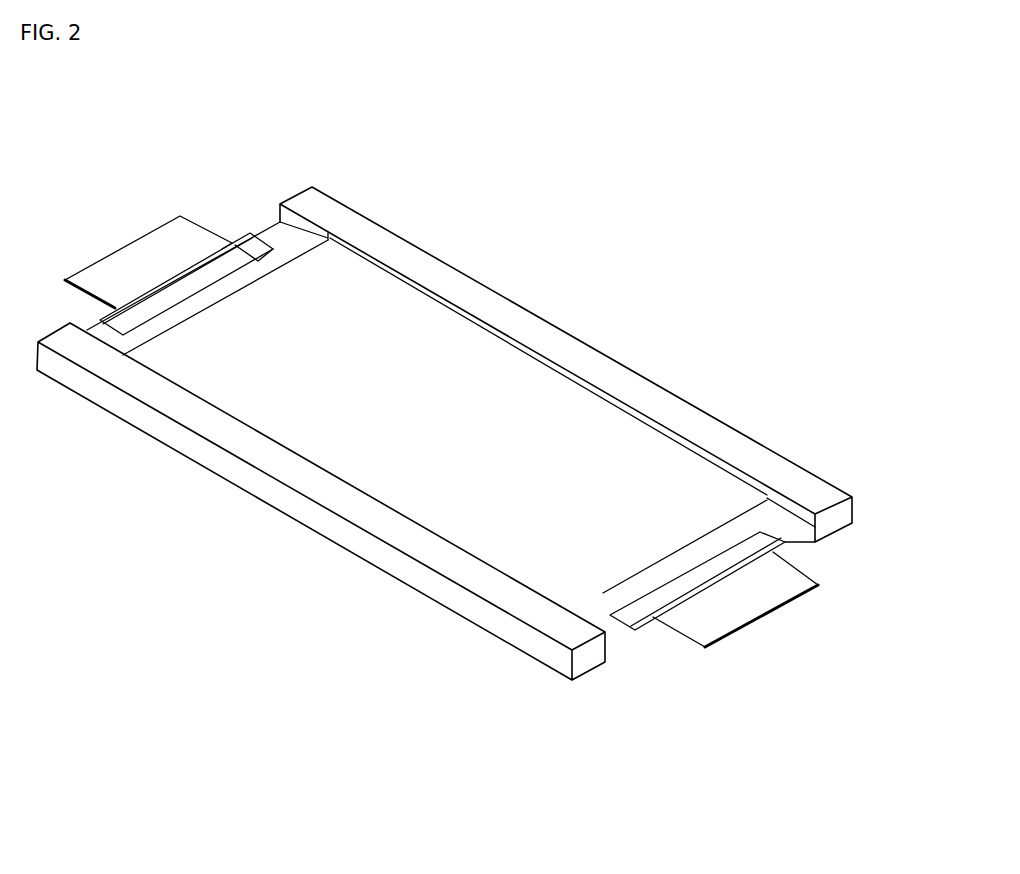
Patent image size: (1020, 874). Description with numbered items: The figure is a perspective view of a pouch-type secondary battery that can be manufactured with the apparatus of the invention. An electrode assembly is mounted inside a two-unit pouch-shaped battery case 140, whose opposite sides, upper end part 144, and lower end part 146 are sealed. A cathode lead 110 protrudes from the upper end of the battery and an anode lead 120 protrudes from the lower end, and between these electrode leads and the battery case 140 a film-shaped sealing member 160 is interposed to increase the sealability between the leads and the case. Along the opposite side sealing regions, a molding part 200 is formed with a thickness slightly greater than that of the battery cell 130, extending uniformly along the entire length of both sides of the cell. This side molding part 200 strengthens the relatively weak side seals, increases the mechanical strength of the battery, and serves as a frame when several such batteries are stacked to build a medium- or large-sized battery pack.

The cathode lead 110 is at (722, 622).
The anode lead 120 is at (134, 253).
The battery cell 130 is at (437, 323).
The pouch-shaped battery case 140 is at (617, 637).
The upper end part 144 is at (787, 527).
The lower end part 146 is at (282, 243).
The film-shaped sealing member 160 is at (783, 547).
The molding part 200 is at (586, 356).